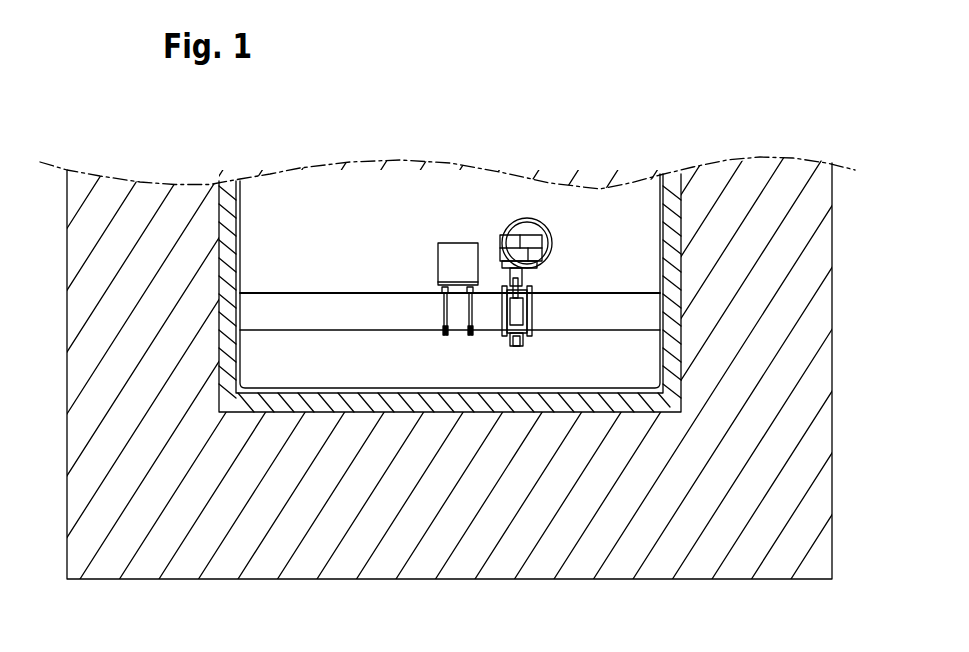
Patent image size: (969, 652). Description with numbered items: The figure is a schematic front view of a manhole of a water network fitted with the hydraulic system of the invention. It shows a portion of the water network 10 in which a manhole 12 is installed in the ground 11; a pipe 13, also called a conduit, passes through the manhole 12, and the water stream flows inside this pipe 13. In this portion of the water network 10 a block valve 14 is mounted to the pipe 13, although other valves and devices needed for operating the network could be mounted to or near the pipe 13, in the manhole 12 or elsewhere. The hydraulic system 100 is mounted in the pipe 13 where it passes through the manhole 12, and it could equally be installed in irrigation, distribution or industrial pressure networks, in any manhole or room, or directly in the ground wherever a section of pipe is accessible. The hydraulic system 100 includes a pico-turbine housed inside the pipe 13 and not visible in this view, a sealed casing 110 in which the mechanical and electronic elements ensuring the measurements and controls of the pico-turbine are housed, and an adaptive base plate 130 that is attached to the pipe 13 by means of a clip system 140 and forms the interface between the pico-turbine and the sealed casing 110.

The water network 10 is at (191, 159).
The ground 11 is at (147, 380).
The manhole 12 is at (322, 403).
The pipe 13 is at (398, 320).
The block valve 14 is at (520, 318).
The hydraulic system 100 is at (500, 374).
The sealed casing 110 is at (463, 258).
The adaptive base plate 130 is at (455, 282).
The clip system 140 is at (443, 336).